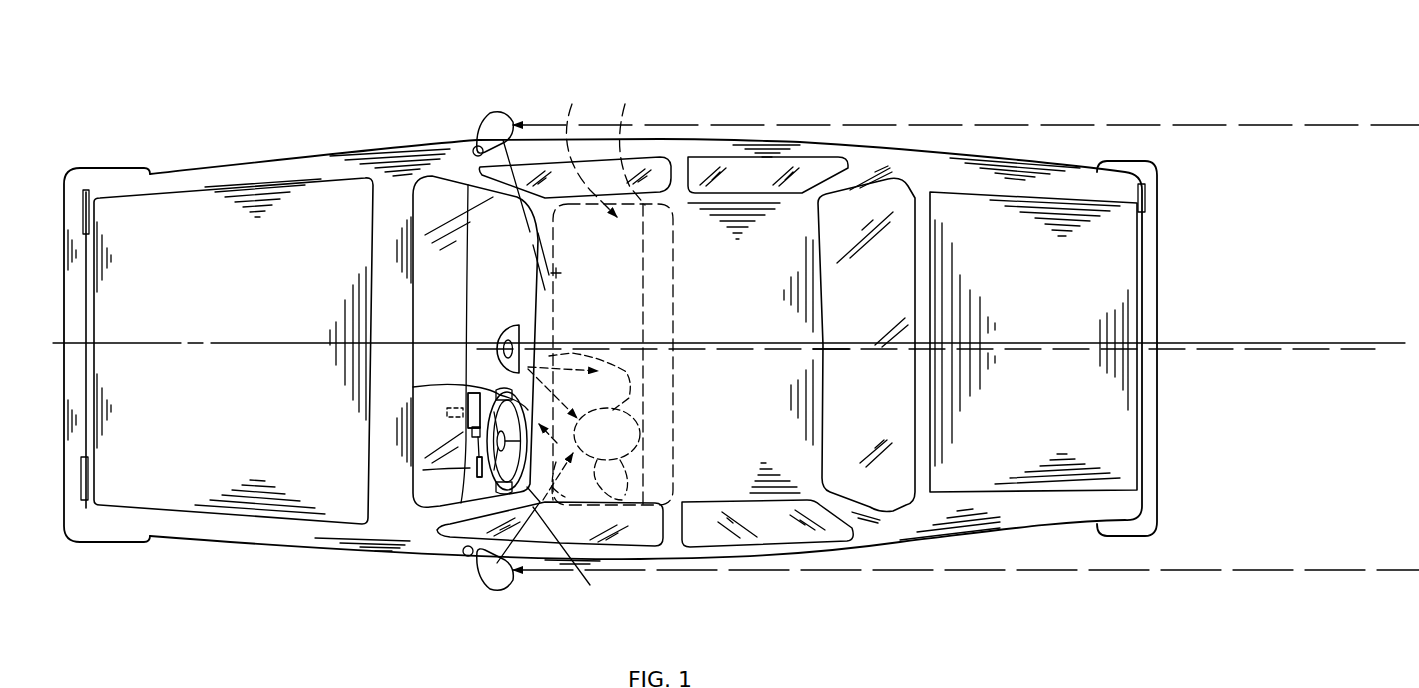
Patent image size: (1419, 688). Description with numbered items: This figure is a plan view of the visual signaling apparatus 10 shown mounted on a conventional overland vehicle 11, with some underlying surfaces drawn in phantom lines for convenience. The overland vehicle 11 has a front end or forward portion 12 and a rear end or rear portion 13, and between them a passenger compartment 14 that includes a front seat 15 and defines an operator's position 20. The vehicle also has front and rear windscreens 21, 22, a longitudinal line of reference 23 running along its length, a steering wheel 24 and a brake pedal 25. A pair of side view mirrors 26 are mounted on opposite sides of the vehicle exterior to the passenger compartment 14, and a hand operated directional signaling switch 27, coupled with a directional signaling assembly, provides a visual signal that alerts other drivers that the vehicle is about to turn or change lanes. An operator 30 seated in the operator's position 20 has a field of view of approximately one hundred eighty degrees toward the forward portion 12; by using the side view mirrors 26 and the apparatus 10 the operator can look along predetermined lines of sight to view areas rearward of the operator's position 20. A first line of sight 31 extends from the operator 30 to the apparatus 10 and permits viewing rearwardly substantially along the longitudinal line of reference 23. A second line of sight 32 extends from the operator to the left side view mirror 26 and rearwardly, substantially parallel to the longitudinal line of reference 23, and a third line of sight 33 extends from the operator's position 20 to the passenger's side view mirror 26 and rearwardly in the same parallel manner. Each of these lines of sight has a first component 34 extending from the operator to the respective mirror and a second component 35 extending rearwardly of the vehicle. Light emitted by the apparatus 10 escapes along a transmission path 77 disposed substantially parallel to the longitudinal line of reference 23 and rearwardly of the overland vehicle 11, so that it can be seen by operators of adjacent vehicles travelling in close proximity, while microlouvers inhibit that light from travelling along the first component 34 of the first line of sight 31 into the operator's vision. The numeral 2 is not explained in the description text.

The sensing beam direction 2 is at (575, 433).
The visual signaling apparatus 10 is at (492, 332).
The overland vehicle 11 is at (333, 127).
The forward portion 12 is at (176, 215).
The rear portion 13 is at (1025, 173).
The passenger compartment 14 is at (591, 151).
The front seat 15 is at (632, 145).
The operator's position 20 is at (655, 434).
The front windscreen 21 is at (447, 452).
The rear windscreen 22 is at (882, 434).
The longitudinal line of reference 23 is at (120, 340).
The steering wheel 24 is at (492, 484).
The brake pedal 25 is at (468, 393).
The side view mirrors 26 is at (481, 122).
The hand operated directional signaling switch 27 is at (473, 468).
The operator 30 is at (597, 443).
The first line of sight 31 is at (516, 376).
The second line of sight 32 is at (568, 557).
The third line of sight 33 is at (551, 273).
The first component 34 is at (557, 272).
The second component 35 is at (748, 122).
The transmission path 77 is at (813, 348).